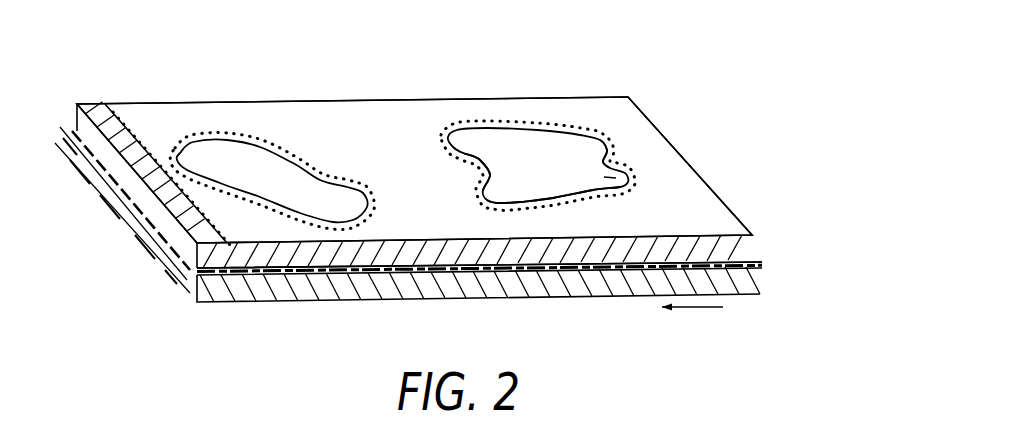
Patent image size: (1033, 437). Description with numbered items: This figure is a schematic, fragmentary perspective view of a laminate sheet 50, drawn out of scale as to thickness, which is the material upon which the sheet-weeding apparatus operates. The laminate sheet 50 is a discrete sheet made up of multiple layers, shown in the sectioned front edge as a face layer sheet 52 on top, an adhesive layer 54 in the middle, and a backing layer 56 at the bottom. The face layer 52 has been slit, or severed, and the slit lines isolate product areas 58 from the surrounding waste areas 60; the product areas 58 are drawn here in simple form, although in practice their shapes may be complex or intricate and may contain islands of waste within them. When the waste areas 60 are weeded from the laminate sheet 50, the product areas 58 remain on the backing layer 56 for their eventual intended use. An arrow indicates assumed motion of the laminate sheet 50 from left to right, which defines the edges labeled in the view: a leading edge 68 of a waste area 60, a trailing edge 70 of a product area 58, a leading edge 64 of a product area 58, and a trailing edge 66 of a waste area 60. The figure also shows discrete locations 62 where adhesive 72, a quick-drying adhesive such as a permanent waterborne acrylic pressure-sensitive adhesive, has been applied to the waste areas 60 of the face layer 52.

The laminate sheet 50 is at (470, 88).
The face layer sheet 52 is at (290, 257).
The adhesive layer 54 is at (487, 272).
The backing layer 56 is at (587, 290).
The product areas 58 is at (477, 133).
The waste areas 60 is at (683, 207).
The discrete locations of adhesive 62 is at (327, 225).
The leading edge of product area 64 is at (502, 202).
The trailing edge of waste area 66 is at (465, 163).
The leading edge of waste area 68 is at (613, 148).
The trailing edge of product area 70 is at (612, 178).
The adhesive 72 is at (603, 123).